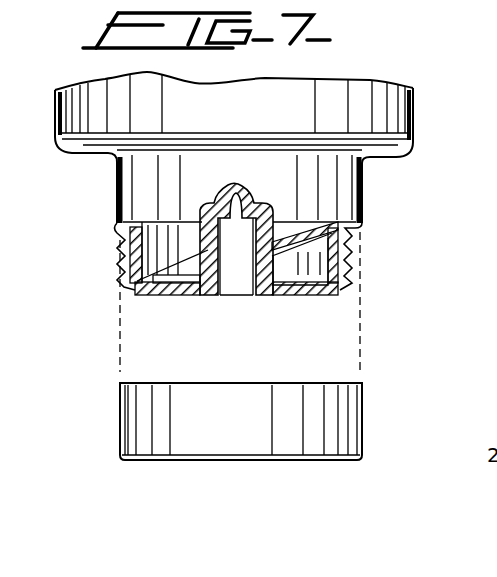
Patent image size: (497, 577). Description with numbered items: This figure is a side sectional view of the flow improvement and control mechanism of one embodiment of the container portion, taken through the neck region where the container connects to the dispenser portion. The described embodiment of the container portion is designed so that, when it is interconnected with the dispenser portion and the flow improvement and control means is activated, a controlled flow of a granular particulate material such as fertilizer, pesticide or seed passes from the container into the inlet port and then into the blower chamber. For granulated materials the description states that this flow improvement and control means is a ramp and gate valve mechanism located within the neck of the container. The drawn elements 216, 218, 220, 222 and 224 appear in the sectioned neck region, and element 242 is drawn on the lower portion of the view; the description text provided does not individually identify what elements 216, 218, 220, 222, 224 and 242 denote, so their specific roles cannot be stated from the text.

The bar 216 is at (180, 293).
The valve body 218 is at (185, 282).
The bottom plate 220 is at (137, 288).
The right chamber 222 is at (341, 287).
The stem 224 is at (234, 268).
The bottom band 242 is at (330, 415).